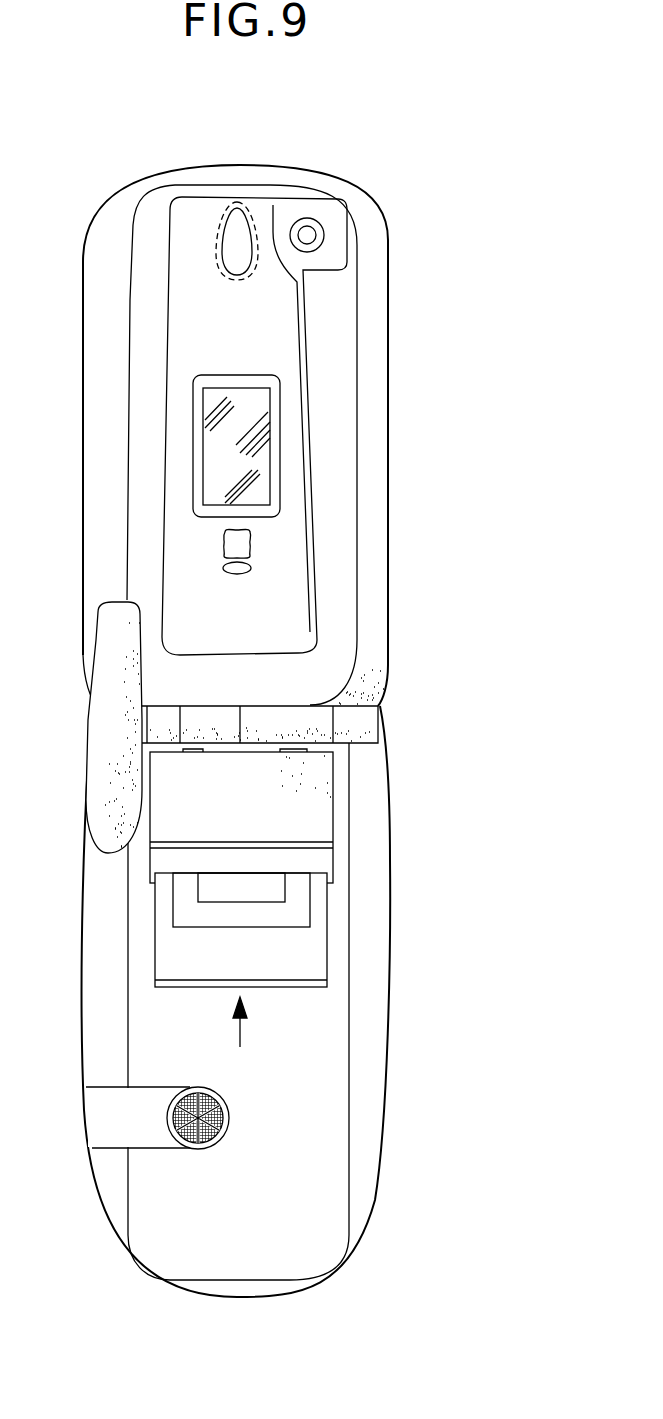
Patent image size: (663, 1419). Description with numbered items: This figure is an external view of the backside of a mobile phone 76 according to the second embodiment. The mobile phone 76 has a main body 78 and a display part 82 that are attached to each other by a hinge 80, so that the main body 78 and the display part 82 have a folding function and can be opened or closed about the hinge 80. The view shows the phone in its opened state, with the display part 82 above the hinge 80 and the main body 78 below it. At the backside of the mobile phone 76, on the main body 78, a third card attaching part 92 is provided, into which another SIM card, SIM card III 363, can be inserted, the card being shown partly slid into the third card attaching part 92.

The mobile phone 76 is at (281, 766).
The main body 78 is at (379, 1175).
The hinge 80 is at (381, 740).
The display part 82 is at (390, 483).
The third card attaching part 92 is at (297, 877).
The SIM card III 363 is at (315, 868).